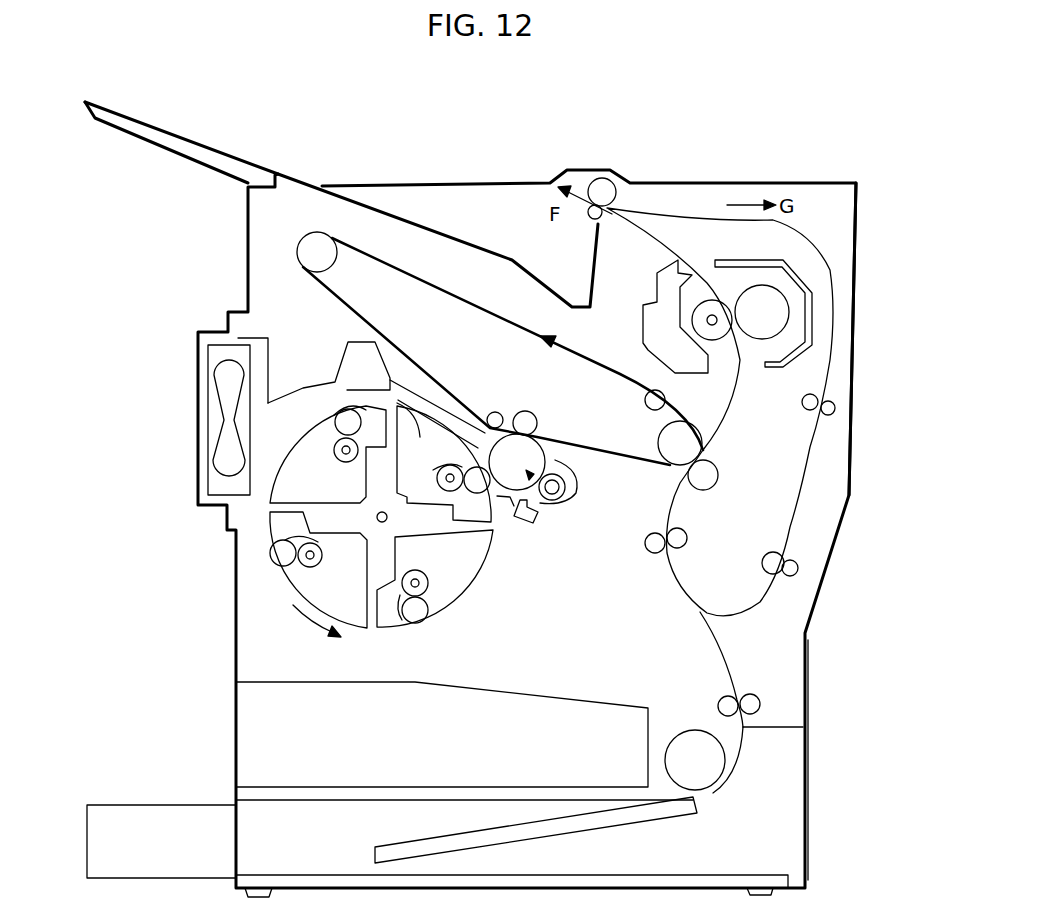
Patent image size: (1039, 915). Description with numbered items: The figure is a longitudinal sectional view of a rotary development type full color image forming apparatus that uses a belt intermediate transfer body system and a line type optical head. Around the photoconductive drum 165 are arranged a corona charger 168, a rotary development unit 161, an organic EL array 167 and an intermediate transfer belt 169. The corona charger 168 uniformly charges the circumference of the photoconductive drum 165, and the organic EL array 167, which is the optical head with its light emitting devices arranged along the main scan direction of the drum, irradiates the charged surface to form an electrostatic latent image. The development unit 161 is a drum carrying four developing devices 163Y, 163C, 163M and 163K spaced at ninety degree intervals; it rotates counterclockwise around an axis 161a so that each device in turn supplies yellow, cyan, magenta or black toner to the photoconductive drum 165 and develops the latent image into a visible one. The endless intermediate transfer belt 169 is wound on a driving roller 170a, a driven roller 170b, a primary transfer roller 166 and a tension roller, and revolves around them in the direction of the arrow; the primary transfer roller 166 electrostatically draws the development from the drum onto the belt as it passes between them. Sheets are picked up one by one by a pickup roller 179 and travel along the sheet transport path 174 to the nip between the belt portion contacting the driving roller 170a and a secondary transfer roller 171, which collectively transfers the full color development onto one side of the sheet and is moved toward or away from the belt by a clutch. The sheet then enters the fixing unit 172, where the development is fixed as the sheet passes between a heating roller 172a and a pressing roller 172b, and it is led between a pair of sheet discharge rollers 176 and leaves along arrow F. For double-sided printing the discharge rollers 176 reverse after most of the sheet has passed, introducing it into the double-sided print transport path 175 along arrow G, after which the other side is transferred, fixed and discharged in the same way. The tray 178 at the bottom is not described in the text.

The rotary development unit 161 is at (366, 497).
The axis 161a is at (388, 518).
The developing device 163Y is at (333, 382).
The developing device 163K is at (318, 457).
The developing device 163M is at (348, 597).
The developing device 163C is at (453, 577).
The photoconductive drum 165 is at (552, 435).
The primary transfer roller 166 is at (522, 410).
The organic EL array 167 is at (537, 520).
The corona charger 168 is at (574, 503).
The intermediate transfer belt 169 is at (442, 290).
The driving roller 170a is at (665, 432).
The driven roller 170b is at (335, 262).
The secondary transfer roller 171 is at (706, 491).
The fixing unit 172 is at (645, 293).
The heating roller 172a is at (769, 367).
The pressing roller 172b is at (715, 342).
The sheet transport path 174 is at (688, 218).
The double-sided print transport path 175 is at (832, 347).
The pair of sheet discharge rollers 176 is at (600, 176).
The sheet feed tray 178 is at (642, 819).
The pickup roller 179 is at (692, 730).